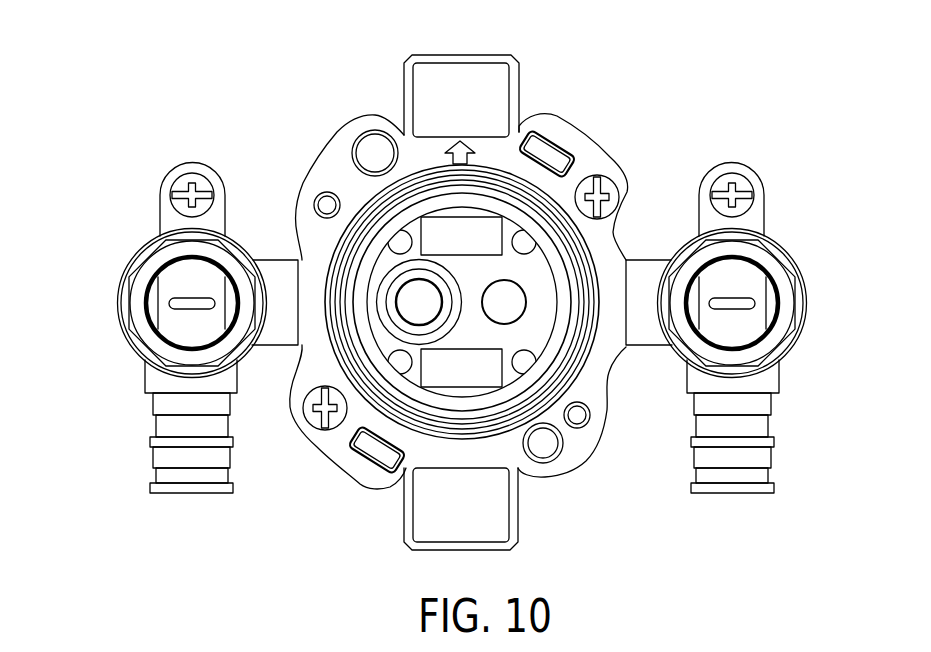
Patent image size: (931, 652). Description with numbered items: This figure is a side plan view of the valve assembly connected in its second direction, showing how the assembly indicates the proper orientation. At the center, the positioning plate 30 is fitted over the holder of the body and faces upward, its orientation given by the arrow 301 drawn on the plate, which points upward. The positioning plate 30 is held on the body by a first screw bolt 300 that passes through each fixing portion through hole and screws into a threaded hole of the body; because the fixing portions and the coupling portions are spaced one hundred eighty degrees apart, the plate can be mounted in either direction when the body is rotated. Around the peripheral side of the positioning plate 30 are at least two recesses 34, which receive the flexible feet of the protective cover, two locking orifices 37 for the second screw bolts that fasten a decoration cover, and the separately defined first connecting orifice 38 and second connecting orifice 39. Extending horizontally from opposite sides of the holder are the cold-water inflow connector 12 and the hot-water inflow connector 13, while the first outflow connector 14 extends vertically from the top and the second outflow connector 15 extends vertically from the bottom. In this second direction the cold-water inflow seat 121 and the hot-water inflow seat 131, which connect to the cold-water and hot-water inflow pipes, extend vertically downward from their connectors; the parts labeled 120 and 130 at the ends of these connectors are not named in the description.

The cold-water inflow connector 12 is at (273, 272).
The hot-water inflow connector 13 is at (645, 277).
The first outflow connector 14 is at (520, 82).
The second outflow connector 15 is at (518, 517).
The positioning plate 30 is at (607, 151).
The first screw bolt 300 is at (613, 187).
The arrow 301 is at (460, 140).
The recess 34 is at (540, 150).
The locking orifice 37 is at (323, 206).
The first connecting orifice 38 is at (368, 152).
The second connecting orifice 39 is at (547, 447).
The left valve body 120 is at (128, 280).
The cold-water inflow seat 121 is at (153, 452).
The right valve body 130 is at (788, 253).
The hot-water inflow seat 131 is at (772, 453).